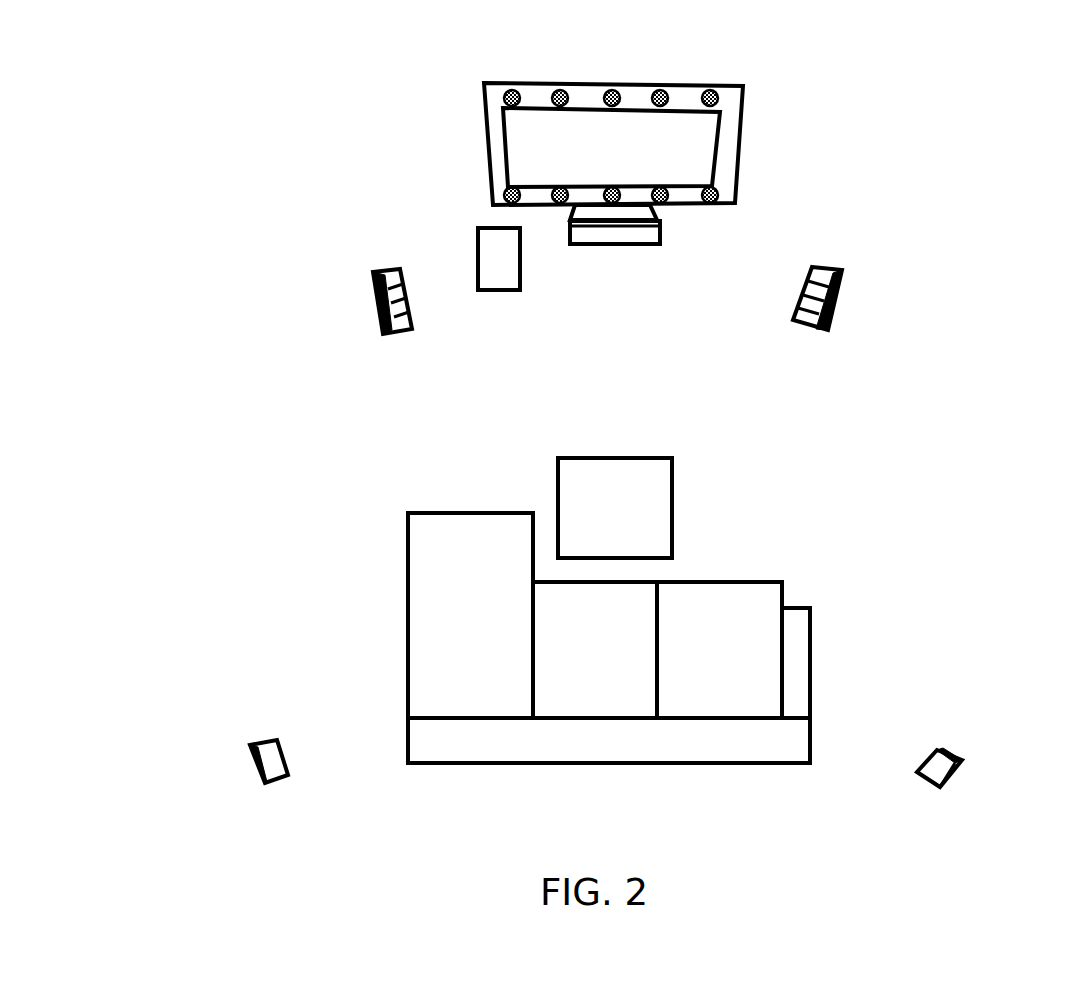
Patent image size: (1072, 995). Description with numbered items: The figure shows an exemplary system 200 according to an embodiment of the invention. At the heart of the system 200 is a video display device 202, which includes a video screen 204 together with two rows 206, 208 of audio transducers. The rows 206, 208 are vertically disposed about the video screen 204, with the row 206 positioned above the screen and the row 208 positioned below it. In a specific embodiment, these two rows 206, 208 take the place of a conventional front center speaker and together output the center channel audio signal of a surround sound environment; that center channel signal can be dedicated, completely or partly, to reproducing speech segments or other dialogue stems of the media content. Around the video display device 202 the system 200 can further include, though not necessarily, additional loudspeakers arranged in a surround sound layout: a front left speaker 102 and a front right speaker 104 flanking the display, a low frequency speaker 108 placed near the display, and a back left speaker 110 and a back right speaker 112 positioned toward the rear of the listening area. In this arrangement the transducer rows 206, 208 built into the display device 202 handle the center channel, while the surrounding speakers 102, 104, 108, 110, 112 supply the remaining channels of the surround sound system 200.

The system 200 is at (846, 42).
The video display device 202 is at (572, 163).
The video screen 204 is at (657, 147).
The row of audio transducers 206 is at (758, 100).
The row of audio transducers 208 is at (754, 192).
The front left speaker 102 is at (357, 284).
The front right speaker 104 is at (855, 281).
The low frequency speaker 108 is at (461, 242).
The back left speaker 110 is at (235, 745).
The back right speaker 112 is at (977, 753).